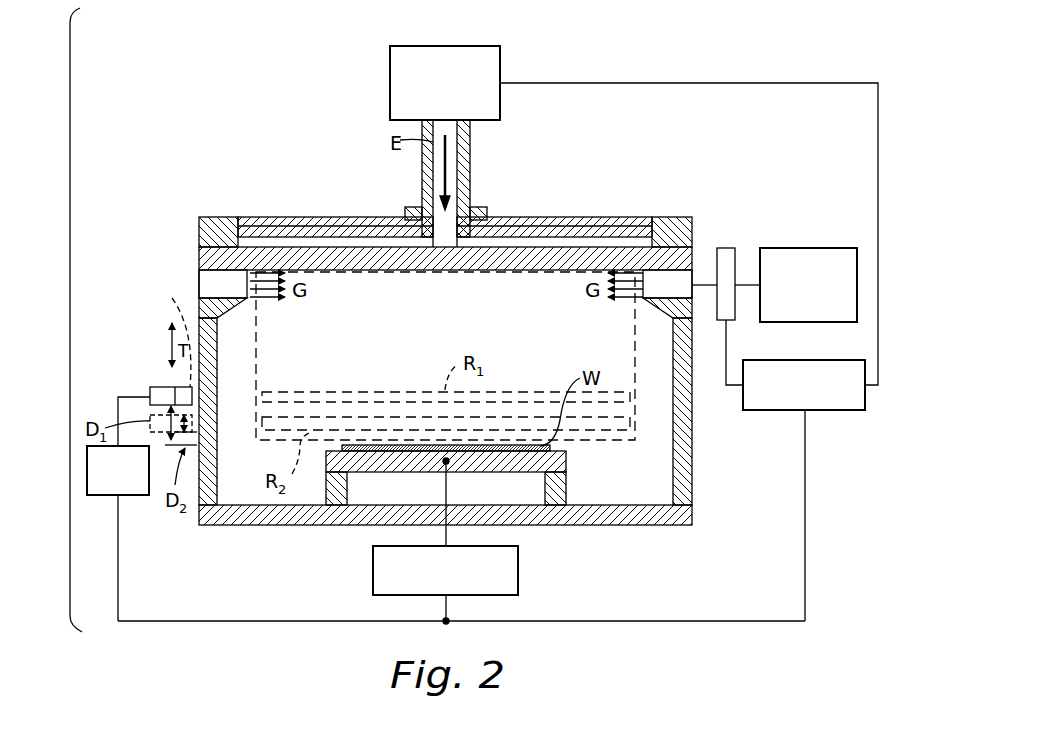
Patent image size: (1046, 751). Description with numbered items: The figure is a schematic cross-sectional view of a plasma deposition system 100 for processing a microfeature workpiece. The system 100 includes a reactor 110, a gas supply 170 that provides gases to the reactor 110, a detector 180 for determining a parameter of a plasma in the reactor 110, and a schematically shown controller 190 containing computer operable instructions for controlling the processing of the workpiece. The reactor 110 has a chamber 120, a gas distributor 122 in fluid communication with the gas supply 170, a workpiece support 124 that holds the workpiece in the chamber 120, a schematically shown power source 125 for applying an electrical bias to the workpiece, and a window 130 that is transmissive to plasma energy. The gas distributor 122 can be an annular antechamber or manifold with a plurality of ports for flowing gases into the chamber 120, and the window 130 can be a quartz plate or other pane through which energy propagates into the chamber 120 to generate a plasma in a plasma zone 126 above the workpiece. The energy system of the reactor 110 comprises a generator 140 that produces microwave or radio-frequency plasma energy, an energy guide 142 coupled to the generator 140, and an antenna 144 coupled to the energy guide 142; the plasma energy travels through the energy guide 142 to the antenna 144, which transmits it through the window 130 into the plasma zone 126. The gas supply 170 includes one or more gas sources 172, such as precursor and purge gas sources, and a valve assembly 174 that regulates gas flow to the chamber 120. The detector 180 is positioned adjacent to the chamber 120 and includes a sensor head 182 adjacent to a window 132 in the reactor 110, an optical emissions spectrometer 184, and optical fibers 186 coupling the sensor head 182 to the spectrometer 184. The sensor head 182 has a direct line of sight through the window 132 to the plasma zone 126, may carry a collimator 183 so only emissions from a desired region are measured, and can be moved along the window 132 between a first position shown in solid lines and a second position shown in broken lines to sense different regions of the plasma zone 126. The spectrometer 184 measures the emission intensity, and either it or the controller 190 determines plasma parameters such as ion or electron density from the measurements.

The plasma deposition system 100 is at (47, 320).
The reactor 110 is at (314, 122).
The chamber 120 is at (692, 460).
The gas distributor 122 is at (215, 284).
The workpiece support 124 is at (566, 462).
The power source 125 is at (518, 571).
The plasma zone 126 is at (608, 440).
The window 130 is at (513, 260).
The window 132 is at (240, 480).
The generator 140 is at (420, 46).
The energy guide 142 is at (422, 174).
The antenna 144 is at (383, 232).
The gas supply 170 is at (822, 191).
The gas sources 172 is at (810, 248).
The valve assembly 174 is at (724, 248).
The detector 180 is at (120, 288).
The sensor head 182 is at (160, 387).
The collimator 183 is at (167, 333).
The optical emissions spectrometer 184 is at (140, 495).
The optical fibers 186 is at (118, 412).
The controller 190 is at (835, 410).